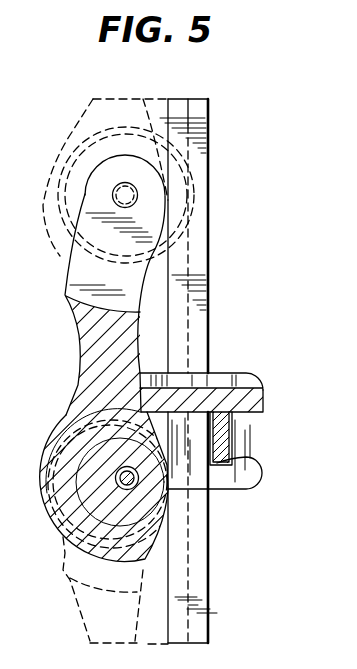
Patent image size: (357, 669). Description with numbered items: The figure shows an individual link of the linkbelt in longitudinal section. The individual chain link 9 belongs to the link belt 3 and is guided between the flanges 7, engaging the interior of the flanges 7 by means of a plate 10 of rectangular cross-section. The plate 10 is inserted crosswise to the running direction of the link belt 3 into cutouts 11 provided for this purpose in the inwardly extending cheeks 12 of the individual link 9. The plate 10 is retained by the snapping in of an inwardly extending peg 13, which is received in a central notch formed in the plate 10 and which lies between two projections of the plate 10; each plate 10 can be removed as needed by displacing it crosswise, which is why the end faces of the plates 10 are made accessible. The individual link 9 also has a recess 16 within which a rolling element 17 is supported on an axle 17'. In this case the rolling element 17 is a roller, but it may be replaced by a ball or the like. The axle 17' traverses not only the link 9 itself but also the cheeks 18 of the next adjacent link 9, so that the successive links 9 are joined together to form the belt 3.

The link belt 3 is at (178, 370).
The flanges 7 is at (196, 616).
The individual chain link 9 is at (90, 352).
The plate 10 is at (228, 470).
The cutouts 11 is at (220, 462).
The inwardly extending cheeks 12 is at (213, 372).
The inwardly extending peg 13 is at (243, 395).
The recesses 16 is at (94, 526).
The rolling elements 17 is at (90, 478).
The axles 17' is at (178, 509).
The cheeks 18 is at (50, 220).